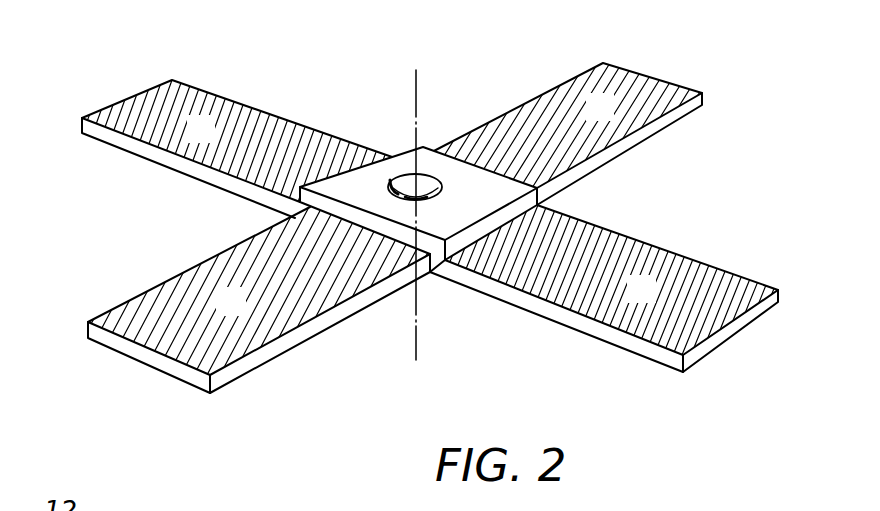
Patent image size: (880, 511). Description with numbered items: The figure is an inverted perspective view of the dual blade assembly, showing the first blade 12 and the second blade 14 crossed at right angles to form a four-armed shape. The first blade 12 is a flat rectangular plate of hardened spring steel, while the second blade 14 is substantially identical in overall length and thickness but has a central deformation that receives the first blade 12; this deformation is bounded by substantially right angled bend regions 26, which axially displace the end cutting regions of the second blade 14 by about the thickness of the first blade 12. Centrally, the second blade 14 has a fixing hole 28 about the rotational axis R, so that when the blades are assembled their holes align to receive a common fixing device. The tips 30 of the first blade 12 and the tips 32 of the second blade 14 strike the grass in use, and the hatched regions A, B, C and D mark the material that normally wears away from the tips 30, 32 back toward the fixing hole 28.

The first blade 12 is at (652, 95).
The second blade 14 is at (715, 278).
The right angled bend regions 26 is at (460, 226).
The fixing hole 28 is at (407, 184).
The tips 30 is at (140, 355).
The tips 32 is at (85, 110).
The rotational axis R is at (416, 93).